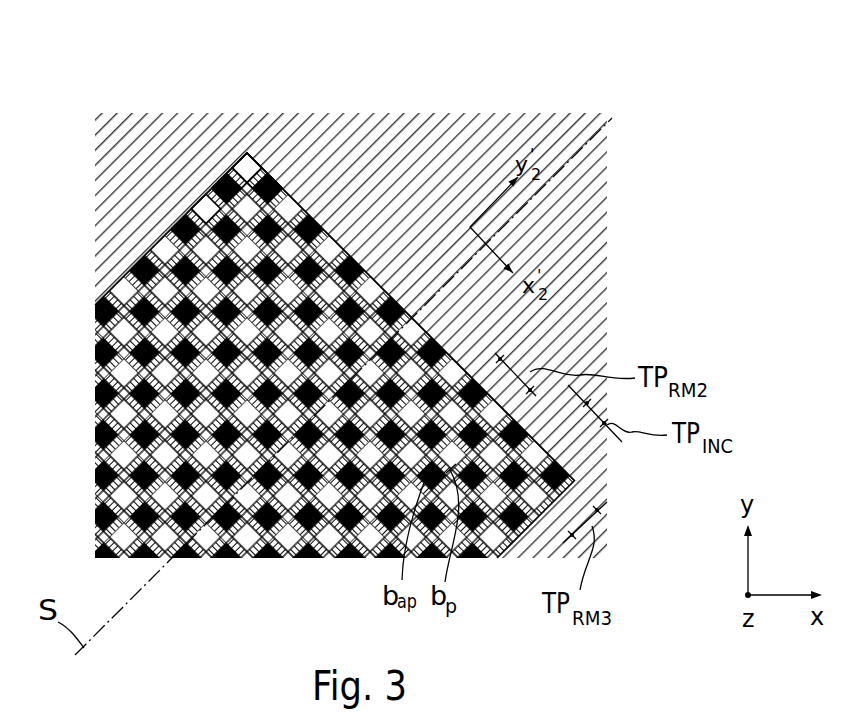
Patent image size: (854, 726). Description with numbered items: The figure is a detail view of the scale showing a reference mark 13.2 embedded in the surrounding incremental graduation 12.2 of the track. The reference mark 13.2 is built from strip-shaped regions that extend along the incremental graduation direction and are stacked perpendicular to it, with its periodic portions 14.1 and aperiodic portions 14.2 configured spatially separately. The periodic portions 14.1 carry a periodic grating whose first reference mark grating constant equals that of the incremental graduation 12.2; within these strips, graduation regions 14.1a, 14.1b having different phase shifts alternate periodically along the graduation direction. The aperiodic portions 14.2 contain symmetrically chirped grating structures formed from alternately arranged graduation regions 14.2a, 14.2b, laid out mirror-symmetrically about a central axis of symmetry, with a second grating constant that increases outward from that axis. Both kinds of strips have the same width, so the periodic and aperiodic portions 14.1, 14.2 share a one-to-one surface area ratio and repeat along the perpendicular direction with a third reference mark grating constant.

The incremental graduation 12.2 is at (497, 142).
The reference mark 13.2 is at (450, 343).
The periodic portions 14.1 is at (217, 167).
The graduation region 14.1a is at (233, 192).
The graduation region 14.1b is at (240, 200).
The aperiodic portions 14.2 is at (233, 150).
The graduation region 14.2a is at (257, 177).
The graduation region 14.2b is at (298, 222).